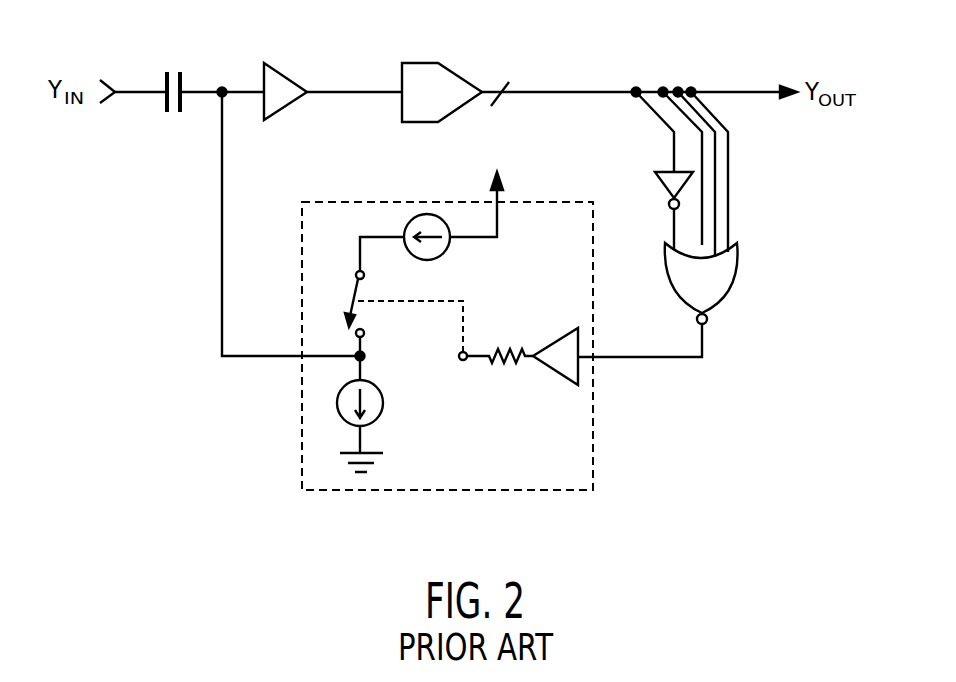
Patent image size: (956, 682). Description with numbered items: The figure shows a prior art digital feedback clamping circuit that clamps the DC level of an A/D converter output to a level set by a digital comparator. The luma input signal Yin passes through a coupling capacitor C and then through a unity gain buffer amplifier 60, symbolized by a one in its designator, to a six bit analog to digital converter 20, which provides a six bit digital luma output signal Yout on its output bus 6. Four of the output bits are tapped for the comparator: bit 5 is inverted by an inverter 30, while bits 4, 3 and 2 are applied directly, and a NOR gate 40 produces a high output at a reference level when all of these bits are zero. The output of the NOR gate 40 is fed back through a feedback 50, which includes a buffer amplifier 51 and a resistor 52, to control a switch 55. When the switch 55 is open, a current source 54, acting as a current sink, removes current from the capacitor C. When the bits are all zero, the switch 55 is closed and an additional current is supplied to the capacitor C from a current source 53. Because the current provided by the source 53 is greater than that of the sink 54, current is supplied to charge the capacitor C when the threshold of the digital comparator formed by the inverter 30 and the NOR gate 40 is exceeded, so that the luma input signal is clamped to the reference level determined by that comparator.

The coupling capacitor C is at (180, 71).
The unity gain buffer amplifier 60 is at (278, 64).
The analog to digital converter 20 is at (419, 63).
The digital output bus 6 is at (507, 81).
The bit 5 is at (636, 88).
The bit 4 is at (663, 88).
The bit 3 is at (679, 88).
The bit 2 is at (692, 88).
The inverter 30 is at (662, 183).
The NOR gate 40 is at (737, 270).
The feedback 50 is at (504, 492).
The buffer amplifier 51 is at (552, 371).
The resistor 52 is at (495, 348).
The current source 53 is at (441, 253).
The current source 54 is at (383, 403).
The switch 55 is at (352, 297).